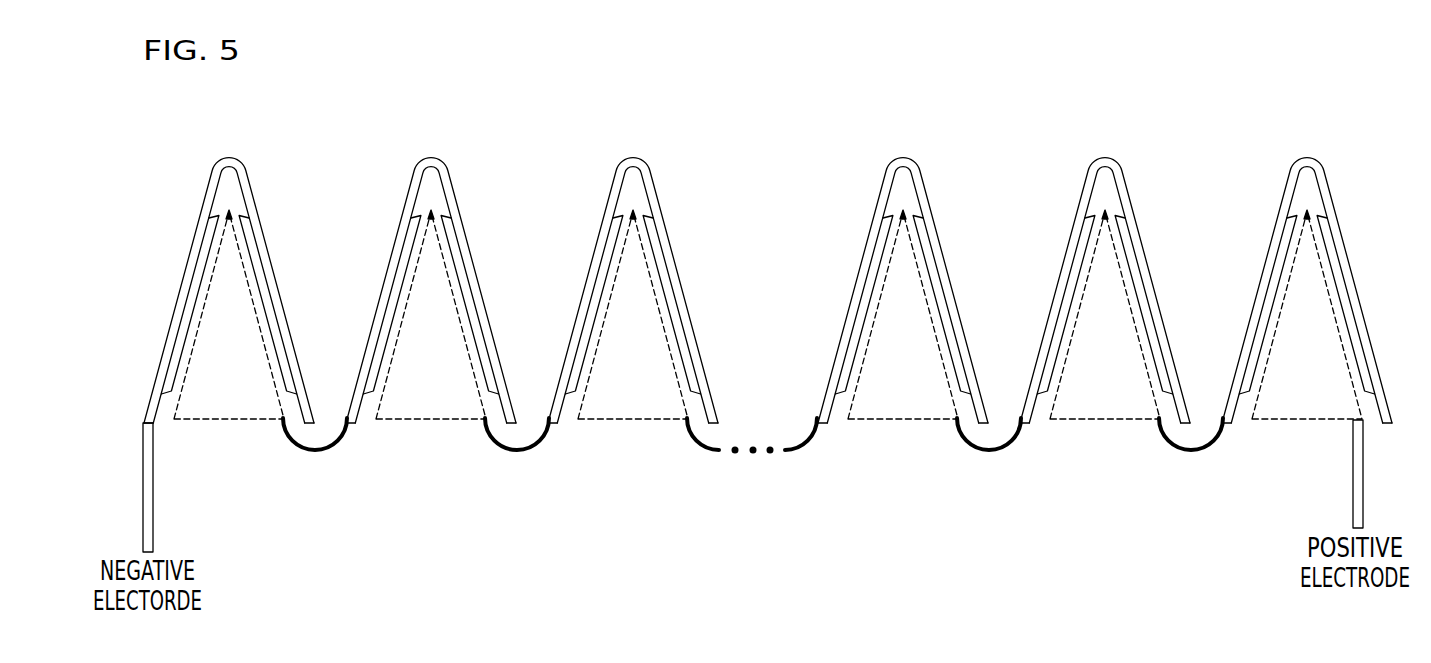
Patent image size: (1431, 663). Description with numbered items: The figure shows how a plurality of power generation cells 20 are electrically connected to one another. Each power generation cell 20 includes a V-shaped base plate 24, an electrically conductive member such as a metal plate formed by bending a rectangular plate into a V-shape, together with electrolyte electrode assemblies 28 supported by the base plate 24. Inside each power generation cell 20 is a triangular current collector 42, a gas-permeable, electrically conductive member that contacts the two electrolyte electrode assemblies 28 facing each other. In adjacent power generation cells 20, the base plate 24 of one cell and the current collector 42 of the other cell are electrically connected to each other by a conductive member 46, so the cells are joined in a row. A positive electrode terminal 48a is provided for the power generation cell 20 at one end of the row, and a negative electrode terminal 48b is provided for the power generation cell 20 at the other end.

The power generation cell 20 is at (763, 290).
The base plate 24 is at (768, 290).
The electrolyte electrode assembly 28 is at (760, 305).
The current collector 42 is at (768, 338).
The conductive member 46 is at (745, 455).
The positive electrode terminal 48a is at (1358, 494).
The negative electrode terminal 48b is at (150, 502).